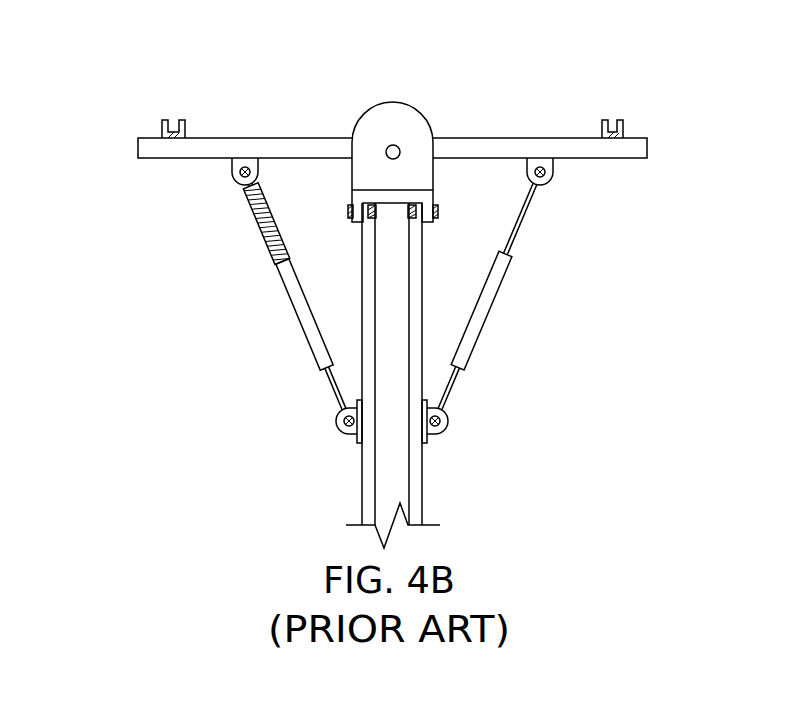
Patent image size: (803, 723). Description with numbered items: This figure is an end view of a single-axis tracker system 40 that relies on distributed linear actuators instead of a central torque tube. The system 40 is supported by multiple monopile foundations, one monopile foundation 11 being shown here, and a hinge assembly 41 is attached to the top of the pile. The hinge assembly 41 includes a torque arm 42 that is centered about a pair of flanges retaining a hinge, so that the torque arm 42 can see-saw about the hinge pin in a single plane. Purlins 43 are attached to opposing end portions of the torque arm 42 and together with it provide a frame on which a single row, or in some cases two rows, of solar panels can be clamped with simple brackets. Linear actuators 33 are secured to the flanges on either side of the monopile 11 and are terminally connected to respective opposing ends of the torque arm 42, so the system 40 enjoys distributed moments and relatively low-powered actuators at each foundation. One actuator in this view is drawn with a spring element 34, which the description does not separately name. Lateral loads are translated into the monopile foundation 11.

The system 40 is at (130, 49).
The hinge assembly 41 is at (393, 102).
The torque arm 42 is at (227, 138).
The purlins 43 is at (160, 132).
The monopile foundation 11 is at (423, 488).
The spring 34 is at (253, 222).
The linear actuators 33 is at (300, 312).